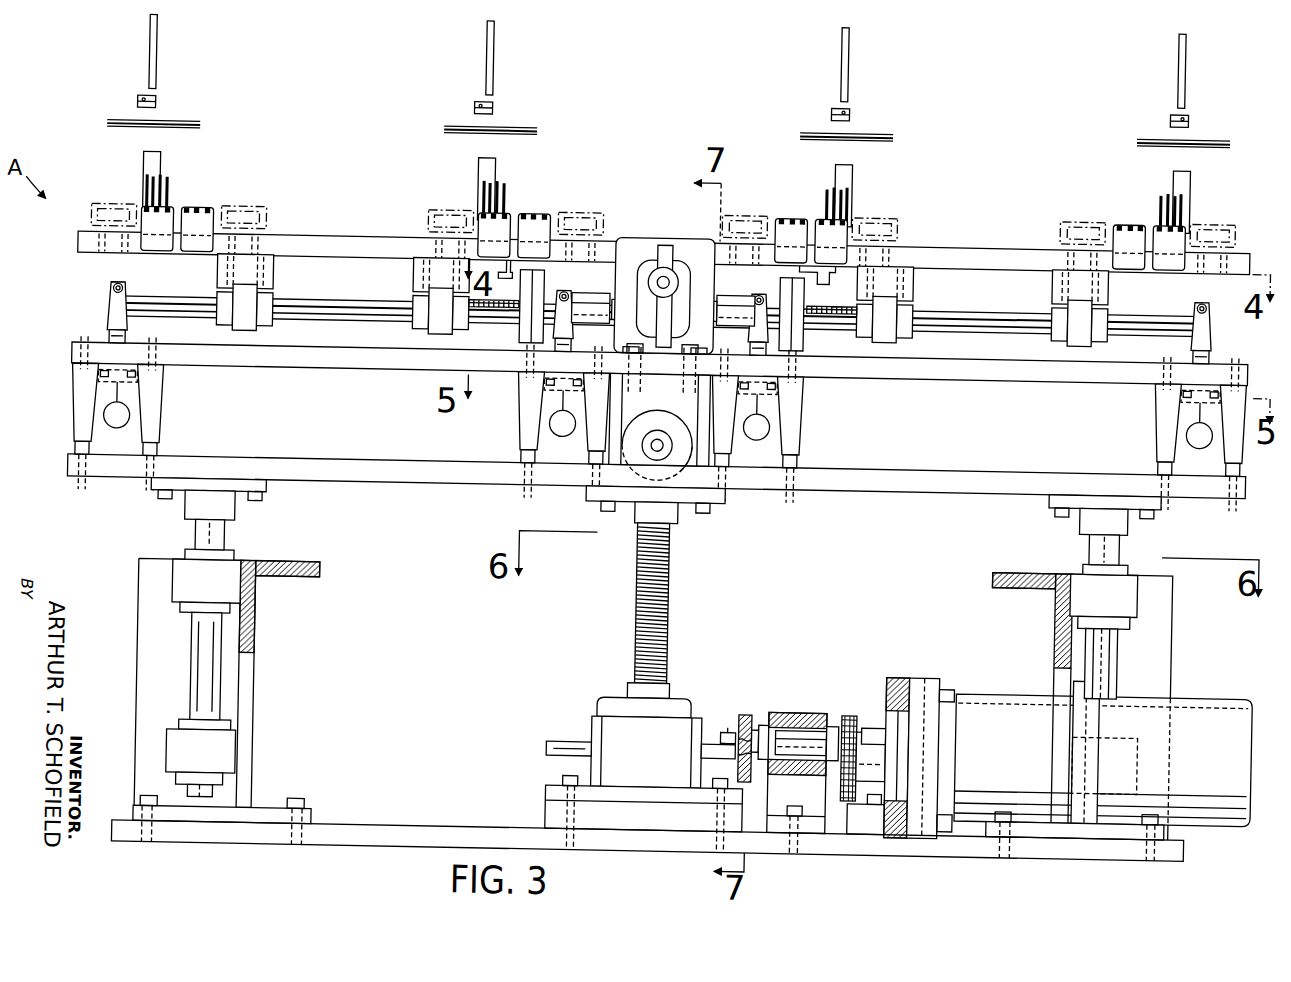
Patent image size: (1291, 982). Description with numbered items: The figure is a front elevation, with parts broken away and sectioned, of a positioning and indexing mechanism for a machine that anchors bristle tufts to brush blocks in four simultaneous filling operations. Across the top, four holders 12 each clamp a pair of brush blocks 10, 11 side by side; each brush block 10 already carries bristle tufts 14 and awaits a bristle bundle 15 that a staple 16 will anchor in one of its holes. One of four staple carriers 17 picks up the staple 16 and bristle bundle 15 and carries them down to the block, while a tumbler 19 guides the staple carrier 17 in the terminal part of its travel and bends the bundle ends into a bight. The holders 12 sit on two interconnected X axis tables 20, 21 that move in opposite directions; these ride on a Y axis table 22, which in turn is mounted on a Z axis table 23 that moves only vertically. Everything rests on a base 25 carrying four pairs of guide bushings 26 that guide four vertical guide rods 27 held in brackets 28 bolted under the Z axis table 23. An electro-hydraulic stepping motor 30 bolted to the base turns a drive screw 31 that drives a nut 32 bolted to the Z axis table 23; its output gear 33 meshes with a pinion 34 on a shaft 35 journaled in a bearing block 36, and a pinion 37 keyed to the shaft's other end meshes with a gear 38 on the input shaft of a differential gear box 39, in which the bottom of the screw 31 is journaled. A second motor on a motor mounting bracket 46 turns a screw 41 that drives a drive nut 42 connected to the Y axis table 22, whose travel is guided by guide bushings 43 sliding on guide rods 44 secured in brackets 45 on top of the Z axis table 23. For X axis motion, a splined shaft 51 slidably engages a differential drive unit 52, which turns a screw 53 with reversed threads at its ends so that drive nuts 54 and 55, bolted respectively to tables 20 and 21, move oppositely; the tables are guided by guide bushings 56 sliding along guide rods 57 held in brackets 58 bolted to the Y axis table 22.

The brush block 10 is at (142, 222).
The brush block 11 is at (211, 225).
The holder 12 is at (92, 223).
The bristle tufts 14 is at (170, 198).
The bristle bundle 15 is at (192, 133).
The staple 16 is at (151, 112).
The staple carrier 17 is at (147, 67).
The tumbler 19 is at (154, 174).
The X axis table 20 is at (290, 249).
The X axis table 21 is at (971, 238).
The Y axis table 22 is at (339, 362).
The Z axis table 23 is at (877, 462).
The base 25 is at (434, 835).
The guide bushings 26 is at (247, 595).
The vertical guide rods 27 is at (201, 678).
The brackets 28 is at (1137, 519).
The electro-hydraulic stepping motor 30 is at (995, 712).
The drive screw 31 is at (676, 579).
The nut 32 is at (683, 527).
The output gear 33 is at (874, 728).
The pinion 34 is at (853, 712).
The shaft 35 is at (802, 731).
The bearing block 36 is at (774, 722).
The pinion 37 is at (755, 712).
The gear 38 is at (734, 730).
The differential gear box 39 is at (612, 732).
The screw 41 is at (631, 502).
The drive nut 42 is at (687, 498).
The guide bushings 43 is at (165, 413).
The guide rods 44 is at (111, 429).
The brackets 45 is at (98, 418).
The motor mounting bracket 46 is at (695, 241).
The splined shaft 51 is at (654, 290).
The differential drive unit 52 is at (656, 266).
The screw 53 is at (822, 300).
The drive nut 54 is at (588, 301).
The drive nut 55 is at (724, 297).
The guide bushings 56 is at (216, 298).
The guide rods 57 is at (306, 312).
The brackets 58 is at (109, 327).